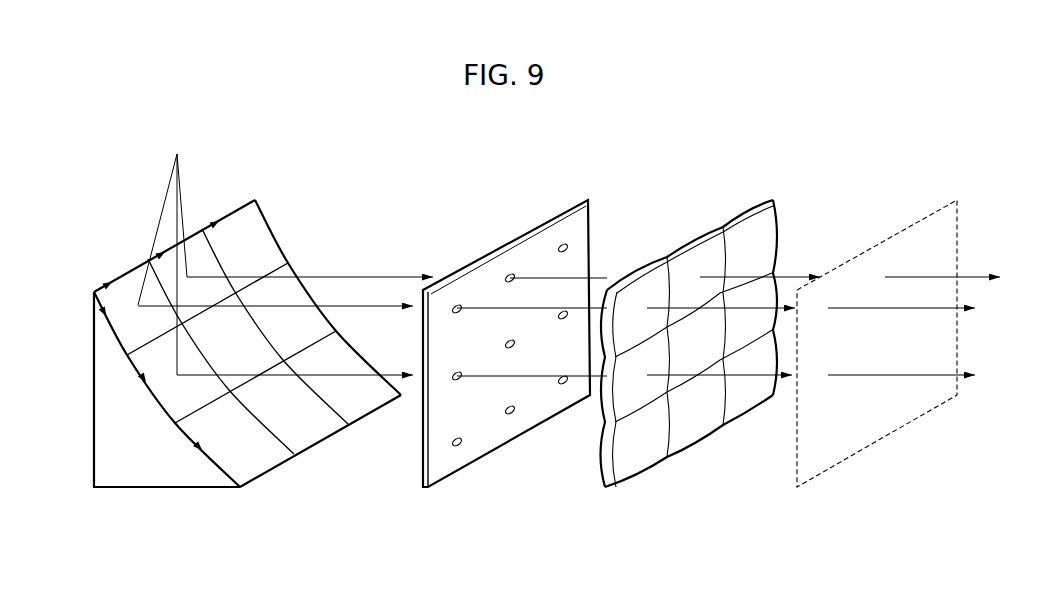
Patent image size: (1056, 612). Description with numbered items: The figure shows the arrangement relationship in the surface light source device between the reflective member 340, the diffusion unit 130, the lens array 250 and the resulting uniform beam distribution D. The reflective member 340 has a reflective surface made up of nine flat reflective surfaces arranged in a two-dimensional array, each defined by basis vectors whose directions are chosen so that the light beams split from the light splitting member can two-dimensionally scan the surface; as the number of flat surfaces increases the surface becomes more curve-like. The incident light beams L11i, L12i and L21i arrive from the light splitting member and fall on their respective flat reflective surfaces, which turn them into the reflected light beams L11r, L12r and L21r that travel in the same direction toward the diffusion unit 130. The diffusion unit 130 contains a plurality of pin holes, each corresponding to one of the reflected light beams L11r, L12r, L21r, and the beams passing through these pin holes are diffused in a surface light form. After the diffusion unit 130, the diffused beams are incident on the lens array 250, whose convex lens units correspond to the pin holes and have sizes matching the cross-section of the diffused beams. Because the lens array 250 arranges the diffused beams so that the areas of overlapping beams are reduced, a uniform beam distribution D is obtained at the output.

The reflective member 340 is at (152, 480).
The diffusion unit 130 is at (445, 467).
The lens array 250 is at (637, 467).
The uniform beam distribution D is at (848, 457).
The incident light beam L11i is at (170, 180).
The incident light beam L12i is at (177, 212).
The incident light beam L21i is at (180, 187).
The reflected light beam L11r is at (556, 297).
The reflected light beam L12r is at (576, 363).
The reflected light beam L21r is at (593, 265).